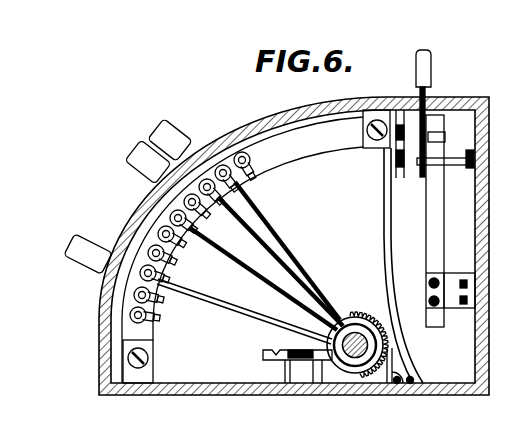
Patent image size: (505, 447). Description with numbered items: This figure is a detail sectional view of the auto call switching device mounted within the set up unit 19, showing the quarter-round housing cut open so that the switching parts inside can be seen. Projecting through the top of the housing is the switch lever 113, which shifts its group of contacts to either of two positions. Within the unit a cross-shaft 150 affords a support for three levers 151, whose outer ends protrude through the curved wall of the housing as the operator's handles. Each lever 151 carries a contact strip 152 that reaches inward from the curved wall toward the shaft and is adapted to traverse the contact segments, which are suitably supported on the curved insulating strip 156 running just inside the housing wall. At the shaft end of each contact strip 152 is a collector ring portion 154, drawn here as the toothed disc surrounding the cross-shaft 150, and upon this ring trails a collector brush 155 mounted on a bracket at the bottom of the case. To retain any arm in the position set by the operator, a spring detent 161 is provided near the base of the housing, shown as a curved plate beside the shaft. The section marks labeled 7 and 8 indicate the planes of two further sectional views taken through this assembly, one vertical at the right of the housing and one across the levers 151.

The set up unit 19 is at (250, 115).
The switch lever 113 is at (421, 70).
The lever 151 is at (143, 153).
The insulating strip 156 is at (288, 144).
The contact strip 152 is at (203, 296).
The collector ring portion 154 is at (357, 322).
The cross-shaft 150 is at (355, 352).
The collector brush 155 is at (324, 358).
The spring detent 161 is at (402, 384).
The section line 7- 7 is at (492, 30).
The section line 8- 8 is at (62, 183).